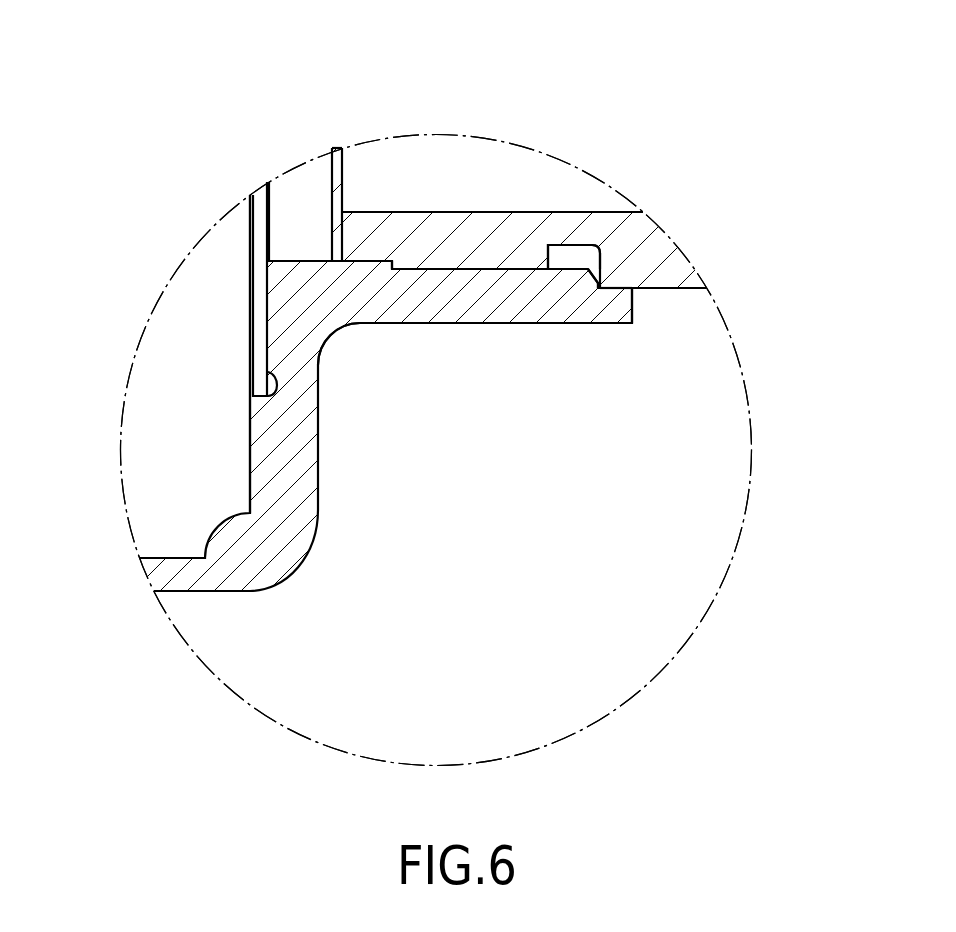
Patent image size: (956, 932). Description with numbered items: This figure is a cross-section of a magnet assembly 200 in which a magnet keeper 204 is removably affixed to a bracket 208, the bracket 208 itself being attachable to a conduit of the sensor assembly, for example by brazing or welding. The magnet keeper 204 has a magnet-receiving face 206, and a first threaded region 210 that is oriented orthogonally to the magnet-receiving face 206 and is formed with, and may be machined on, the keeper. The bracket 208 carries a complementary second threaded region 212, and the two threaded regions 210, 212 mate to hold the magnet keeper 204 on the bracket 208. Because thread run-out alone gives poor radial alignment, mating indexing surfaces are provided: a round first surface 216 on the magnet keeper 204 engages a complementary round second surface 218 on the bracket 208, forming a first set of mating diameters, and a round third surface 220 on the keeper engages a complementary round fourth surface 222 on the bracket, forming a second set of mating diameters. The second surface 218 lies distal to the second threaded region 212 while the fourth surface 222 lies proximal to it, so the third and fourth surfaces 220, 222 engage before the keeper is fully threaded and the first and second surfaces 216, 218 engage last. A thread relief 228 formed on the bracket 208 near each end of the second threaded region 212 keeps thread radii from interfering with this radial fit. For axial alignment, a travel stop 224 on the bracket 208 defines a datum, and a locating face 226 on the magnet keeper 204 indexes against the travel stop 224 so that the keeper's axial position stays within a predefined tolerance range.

The assembly 200 is at (288, 74).
The magnet keeper 204 is at (258, 608).
The magnet-receiving face 206 is at (250, 429).
The bracket 208 is at (701, 331).
The first threaded region 210 is at (463, 270).
The second threaded region 212 is at (483, 266).
The first surface 216 is at (352, 262).
The second surface 218 is at (347, 262).
The third surface 220 is at (621, 288).
The fourth surface 222 is at (630, 288).
The travel stop 224 is at (612, 286).
The locating face 226 is at (598, 285).
The thread relief 228 is at (393, 266).